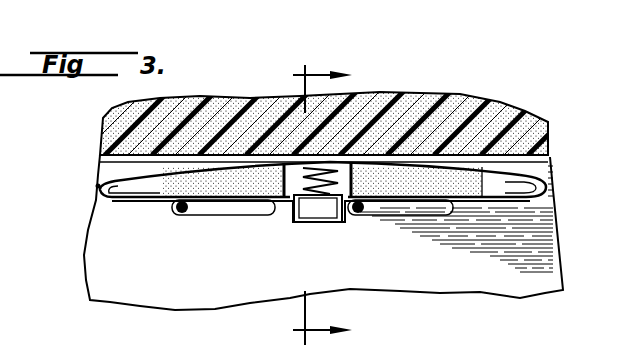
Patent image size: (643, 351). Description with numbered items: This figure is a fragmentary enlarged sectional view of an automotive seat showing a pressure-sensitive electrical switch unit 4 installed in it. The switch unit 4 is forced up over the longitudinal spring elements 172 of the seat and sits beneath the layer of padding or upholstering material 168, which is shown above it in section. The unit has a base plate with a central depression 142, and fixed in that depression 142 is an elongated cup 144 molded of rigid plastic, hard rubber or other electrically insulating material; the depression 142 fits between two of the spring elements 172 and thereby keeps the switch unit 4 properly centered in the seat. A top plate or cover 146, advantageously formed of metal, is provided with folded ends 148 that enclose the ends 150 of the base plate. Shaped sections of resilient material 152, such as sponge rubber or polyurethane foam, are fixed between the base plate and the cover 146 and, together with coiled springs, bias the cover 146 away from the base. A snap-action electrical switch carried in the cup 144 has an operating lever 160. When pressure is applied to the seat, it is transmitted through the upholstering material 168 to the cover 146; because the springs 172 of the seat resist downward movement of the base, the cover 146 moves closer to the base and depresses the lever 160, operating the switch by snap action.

The switch unit 4 is at (58, 191).
The central depression 142 is at (285, 223).
The elongated cup 144 is at (318, 195).
The top plate 146 is at (522, 172).
The folded ends 148 is at (512, 198).
The ends of the base plate 150 is at (540, 180).
The resilient material 152 is at (438, 170).
The operating lever 160 is at (352, 208).
The upholstering material 168 is at (370, 108).
The springs 172 is at (224, 218).